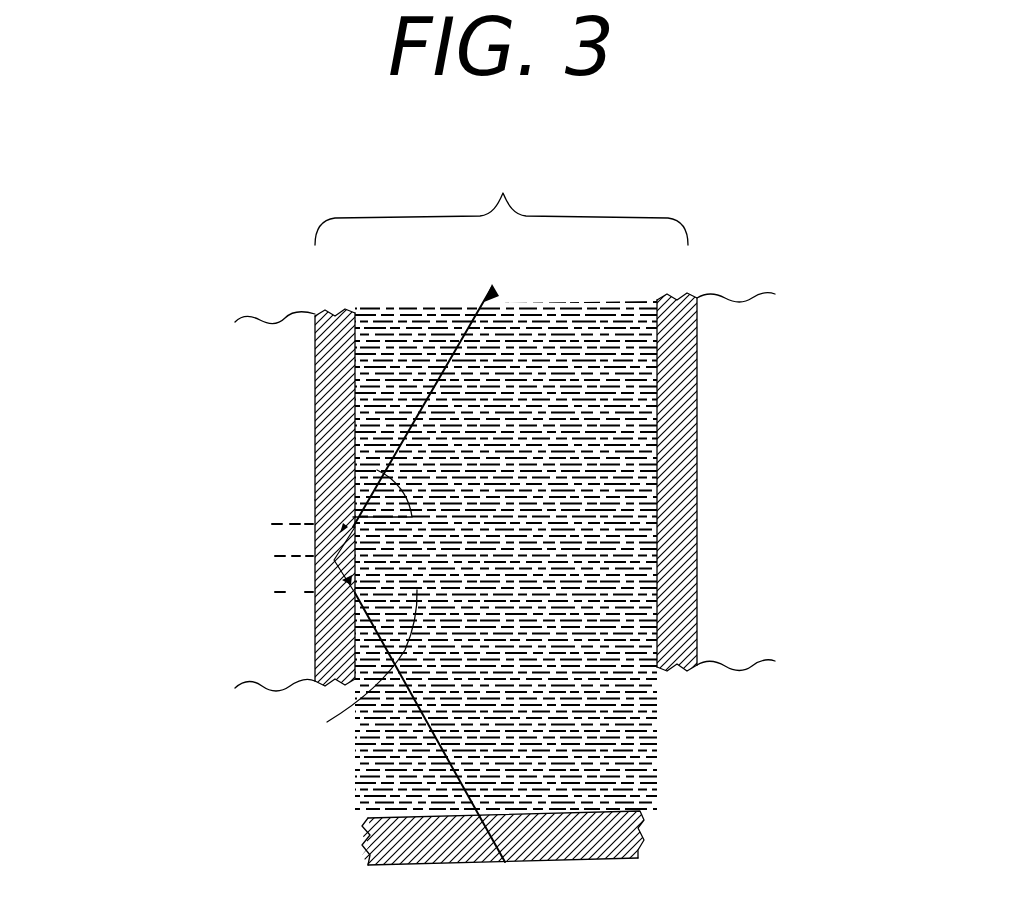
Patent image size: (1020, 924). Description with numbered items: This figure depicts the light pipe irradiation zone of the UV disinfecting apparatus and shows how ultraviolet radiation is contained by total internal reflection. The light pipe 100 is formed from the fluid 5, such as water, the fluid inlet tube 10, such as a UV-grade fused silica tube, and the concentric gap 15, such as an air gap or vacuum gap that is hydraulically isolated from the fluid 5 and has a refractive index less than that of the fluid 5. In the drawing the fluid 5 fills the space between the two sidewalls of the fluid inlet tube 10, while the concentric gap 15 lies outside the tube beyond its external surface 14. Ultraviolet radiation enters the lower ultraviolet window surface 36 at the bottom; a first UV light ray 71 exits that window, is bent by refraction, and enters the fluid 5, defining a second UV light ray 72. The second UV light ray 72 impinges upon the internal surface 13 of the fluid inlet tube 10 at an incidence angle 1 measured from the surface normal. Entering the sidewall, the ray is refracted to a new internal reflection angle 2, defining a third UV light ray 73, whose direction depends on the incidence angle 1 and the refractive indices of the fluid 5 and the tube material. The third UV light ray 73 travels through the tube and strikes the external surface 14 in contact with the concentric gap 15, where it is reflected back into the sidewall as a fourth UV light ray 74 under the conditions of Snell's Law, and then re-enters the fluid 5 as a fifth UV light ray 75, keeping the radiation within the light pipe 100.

The light pipe 100 is at (501, 192).
The fluid 5 is at (506, 556).
The fluid inlet tube 10 is at (315, 358).
The internal surface 13 is at (370, 316).
The external surface 14 is at (315, 340).
The third UV light ray 73 is at (315, 625).
The fourth UV light ray 74 is at (350, 522).
The fifth UV light ray 75 is at (657, 405).
The concentric gap 15 is at (122, 554).
The second UV light ray 72 is at (440, 745).
The internal reflection angle 2 is at (313, 534).
The incidence angle 1 is at (318, 455).
The lower ultraviolet window surface 36 is at (572, 853).
The first UV light ray 71 is at (473, 848).